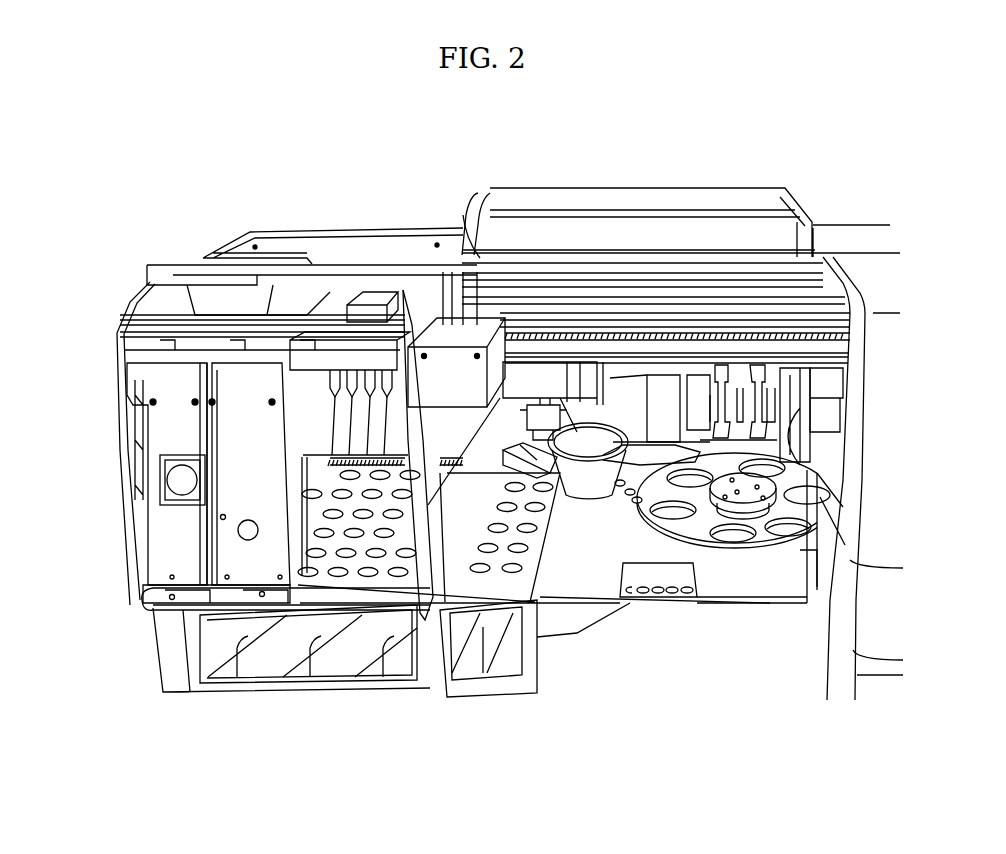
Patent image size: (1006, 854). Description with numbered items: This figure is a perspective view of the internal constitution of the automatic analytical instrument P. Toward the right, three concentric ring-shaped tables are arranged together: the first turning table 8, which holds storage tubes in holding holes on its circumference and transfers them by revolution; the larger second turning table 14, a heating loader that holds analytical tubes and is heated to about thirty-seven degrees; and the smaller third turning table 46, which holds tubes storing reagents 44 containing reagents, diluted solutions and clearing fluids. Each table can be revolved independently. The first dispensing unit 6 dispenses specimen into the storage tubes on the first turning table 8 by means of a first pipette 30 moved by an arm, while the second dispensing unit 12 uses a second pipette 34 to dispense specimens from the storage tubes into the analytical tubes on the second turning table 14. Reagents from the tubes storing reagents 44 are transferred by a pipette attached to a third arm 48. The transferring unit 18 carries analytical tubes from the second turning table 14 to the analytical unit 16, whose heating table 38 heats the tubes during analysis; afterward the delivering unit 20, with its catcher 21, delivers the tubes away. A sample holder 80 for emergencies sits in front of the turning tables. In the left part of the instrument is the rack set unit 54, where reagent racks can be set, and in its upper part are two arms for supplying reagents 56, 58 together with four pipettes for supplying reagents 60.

The automatic analytical instrument P is at (376, 163).
The first dispensing unit 6 is at (826, 388).
The first turning table 8 is at (626, 503).
The second dispensing unit 12 is at (703, 380).
The second turning table 14 is at (643, 594).
The analytical unit 16 is at (566, 405).
The transferring unit 18 is at (512, 468).
The delivering unit 20 is at (390, 462).
The catcher 21 is at (499, 398).
The first pipette 30 is at (815, 528).
The second pipette 34 is at (758, 405).
The heating table 38 is at (587, 447).
The tubes storing reagents 44 is at (737, 538).
The third turning table 46 is at (694, 542).
The third arm 48 is at (757, 377).
The rack set unit 54 is at (370, 668).
The arm for supplying reagents 56 is at (152, 385).
The arm for supplying reagents 58 is at (248, 383).
The pipettes for supplying reagents 60 is at (307, 548).
The sample holder 80 is at (630, 530).